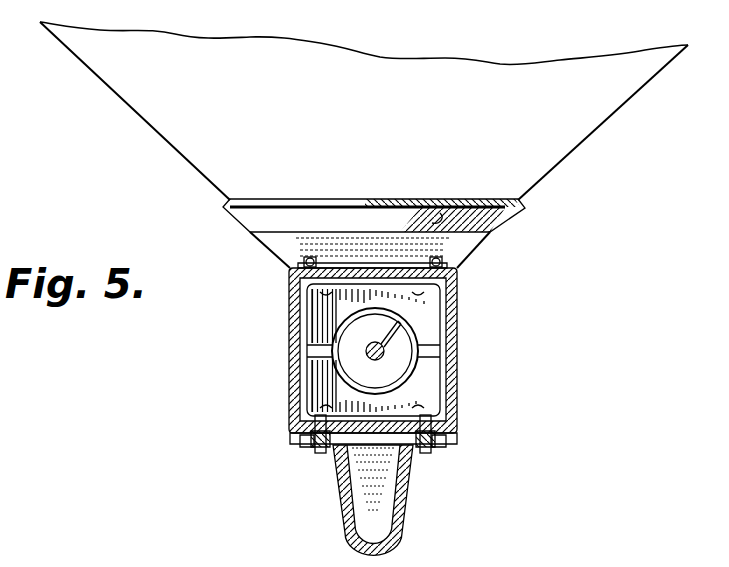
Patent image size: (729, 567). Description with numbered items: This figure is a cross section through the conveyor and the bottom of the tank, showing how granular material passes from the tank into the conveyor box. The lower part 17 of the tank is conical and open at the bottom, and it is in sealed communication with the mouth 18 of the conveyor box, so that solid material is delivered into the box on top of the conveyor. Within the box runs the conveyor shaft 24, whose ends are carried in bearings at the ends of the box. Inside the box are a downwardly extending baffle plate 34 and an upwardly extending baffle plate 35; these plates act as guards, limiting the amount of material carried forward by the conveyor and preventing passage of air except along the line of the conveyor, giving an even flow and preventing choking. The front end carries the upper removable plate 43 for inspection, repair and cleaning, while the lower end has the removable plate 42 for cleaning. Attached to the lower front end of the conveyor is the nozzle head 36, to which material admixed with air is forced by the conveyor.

The lower part of the tank 17 is at (364, 111).
The mouth of the conveyor box 18 is at (455, 243).
The upper removable plate 43 is at (350, 263).
The downwardly extending baffle plate 34 is at (432, 298).
The upwardly extending baffle plate 35 is at (323, 400).
The conveyor shaft 24 is at (386, 358).
The removable plate 42 is at (445, 446).
The nozzle head 36 is at (323, 452).